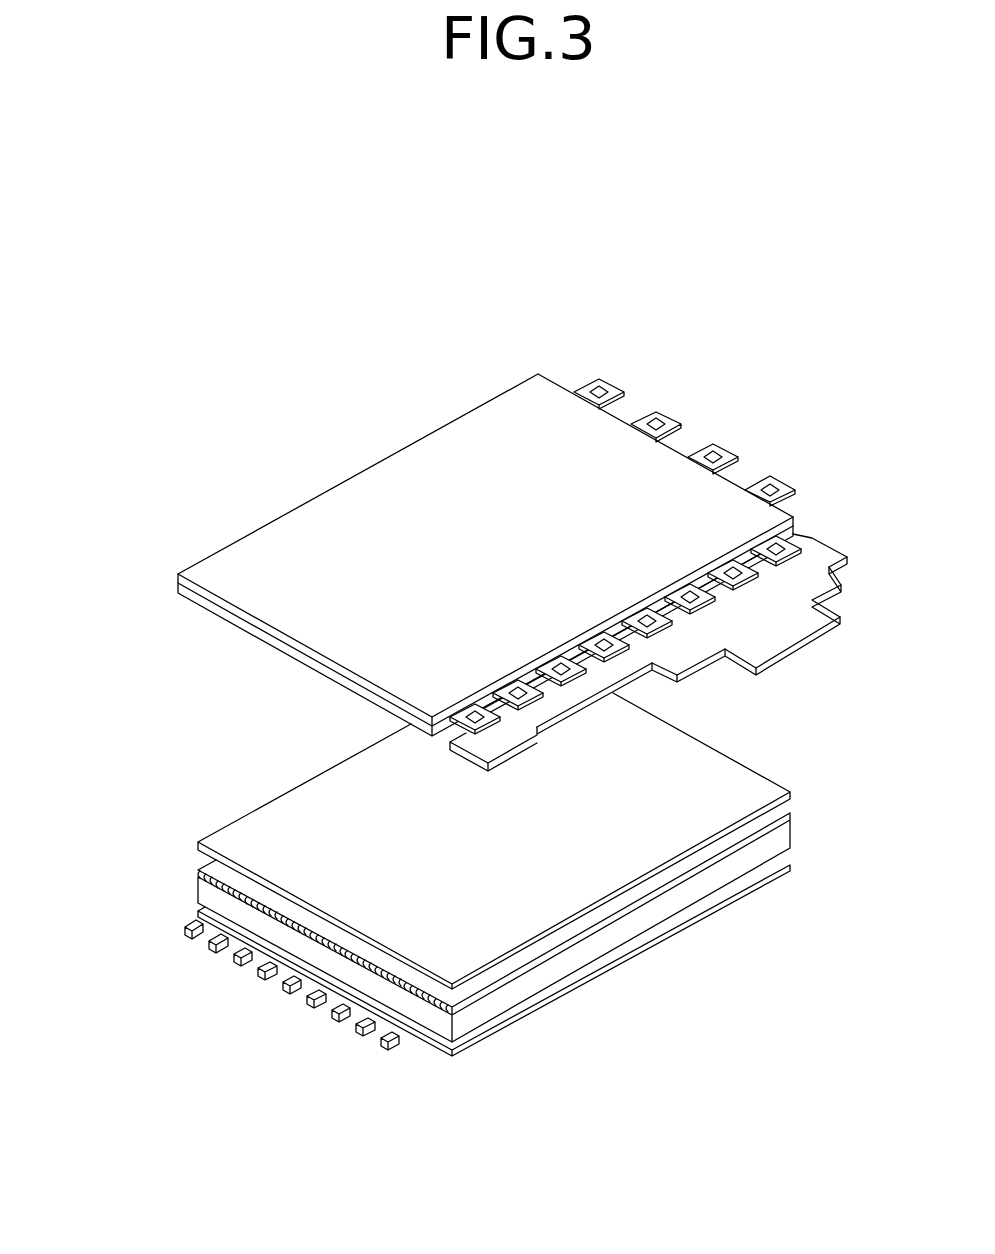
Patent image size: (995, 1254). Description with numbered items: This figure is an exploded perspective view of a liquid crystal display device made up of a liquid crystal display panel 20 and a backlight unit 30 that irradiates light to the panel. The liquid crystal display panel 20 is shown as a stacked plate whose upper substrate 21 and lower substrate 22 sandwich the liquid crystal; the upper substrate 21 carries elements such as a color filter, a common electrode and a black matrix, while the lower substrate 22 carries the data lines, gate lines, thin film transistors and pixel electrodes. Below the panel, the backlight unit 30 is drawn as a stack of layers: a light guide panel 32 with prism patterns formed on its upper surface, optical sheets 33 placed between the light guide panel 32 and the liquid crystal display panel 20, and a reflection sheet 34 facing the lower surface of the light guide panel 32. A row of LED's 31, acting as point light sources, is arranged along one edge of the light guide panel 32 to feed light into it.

The liquid crystal display panel 20 is at (403, 555).
The upper substrate 21 is at (178, 578).
The lower substrate 22 is at (178, 588).
The backlight unit 30 is at (499, 874).
The LED's 31 is at (187, 938).
The light guide panel 32 is at (790, 848).
The optical sheets 33 is at (774, 794).
The reflection sheet 34 is at (737, 892).